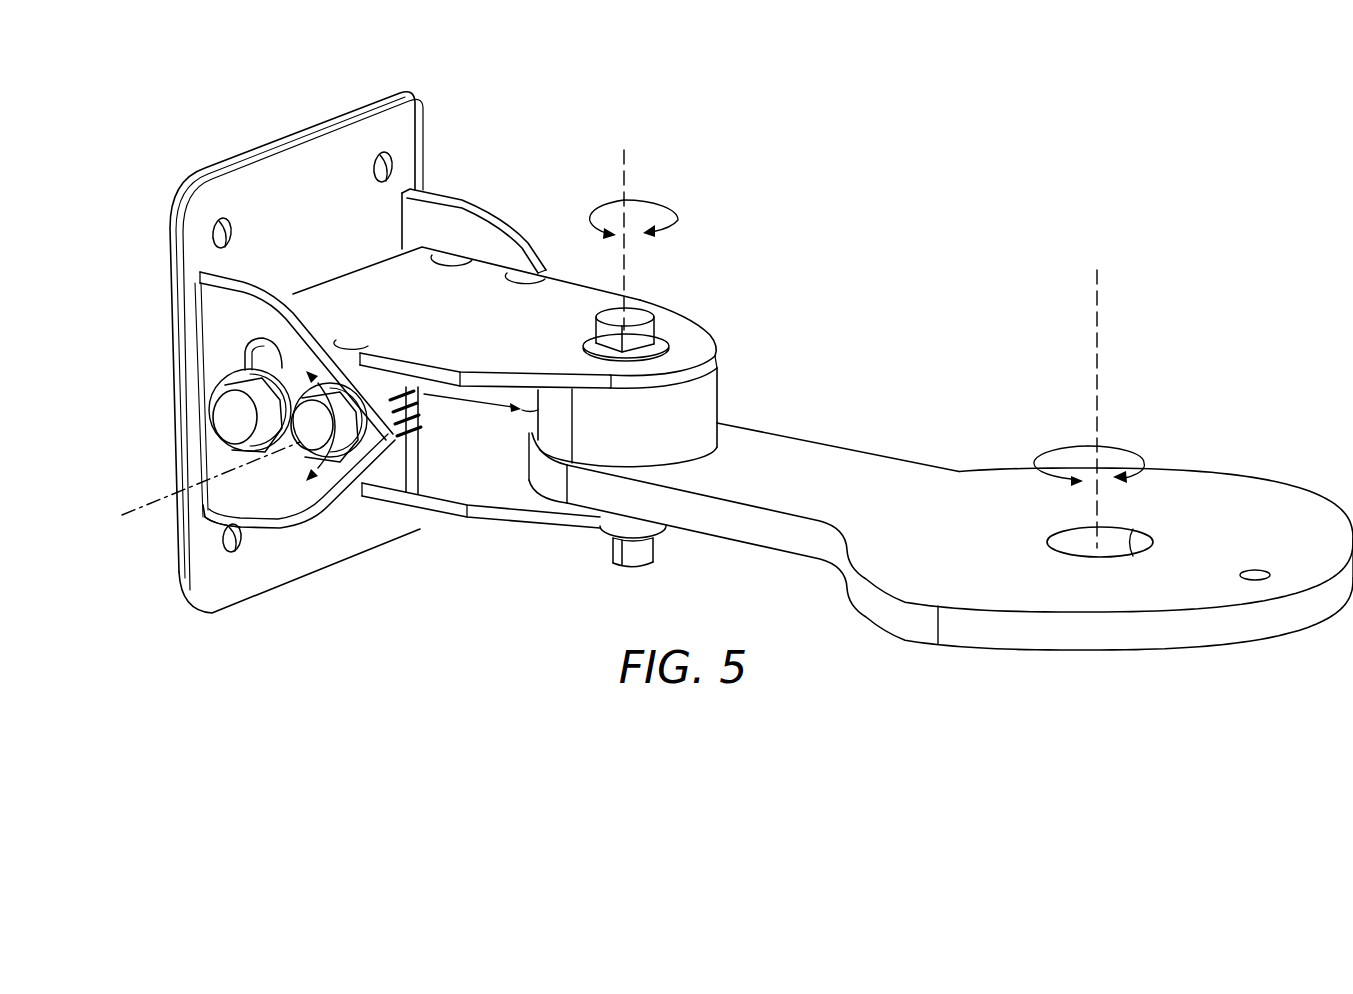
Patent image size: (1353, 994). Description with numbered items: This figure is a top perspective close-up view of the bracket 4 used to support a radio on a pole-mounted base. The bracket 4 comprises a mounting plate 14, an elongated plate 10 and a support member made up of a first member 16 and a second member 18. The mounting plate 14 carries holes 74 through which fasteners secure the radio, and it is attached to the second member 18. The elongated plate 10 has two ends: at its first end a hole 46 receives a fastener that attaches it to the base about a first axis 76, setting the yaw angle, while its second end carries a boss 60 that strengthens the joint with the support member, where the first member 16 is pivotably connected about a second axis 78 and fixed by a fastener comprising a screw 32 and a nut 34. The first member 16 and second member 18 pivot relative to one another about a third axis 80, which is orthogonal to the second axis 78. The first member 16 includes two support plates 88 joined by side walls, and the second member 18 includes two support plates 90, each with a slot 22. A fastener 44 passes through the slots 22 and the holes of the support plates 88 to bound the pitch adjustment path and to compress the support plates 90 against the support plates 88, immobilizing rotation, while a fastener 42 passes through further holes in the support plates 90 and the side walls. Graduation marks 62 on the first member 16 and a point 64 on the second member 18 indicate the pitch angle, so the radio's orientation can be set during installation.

The bracket 4 is at (850, 288).
The elongated plate 10 is at (833, 473).
The mounting plate 14 is at (283, 567).
The first member 16 is at (693, 338).
The second member 18 is at (227, 504).
The slot 22 is at (250, 362).
The screw 32 is at (645, 308).
The nut 34 is at (657, 528).
The fastener 42 is at (317, 453).
The fastener 44 is at (233, 417).
The hole 46 is at (1117, 527).
The boss 60 is at (707, 417).
The graduation marks 62 is at (418, 423).
The point 64 is at (385, 437).
The holes 74 is at (227, 216).
The first axis 76 is at (1097, 285).
The second axis 78 is at (625, 155).
The third axis 80 is at (130, 508).
The support plates 88 is at (560, 297).
The support plates 90 is at (242, 280).